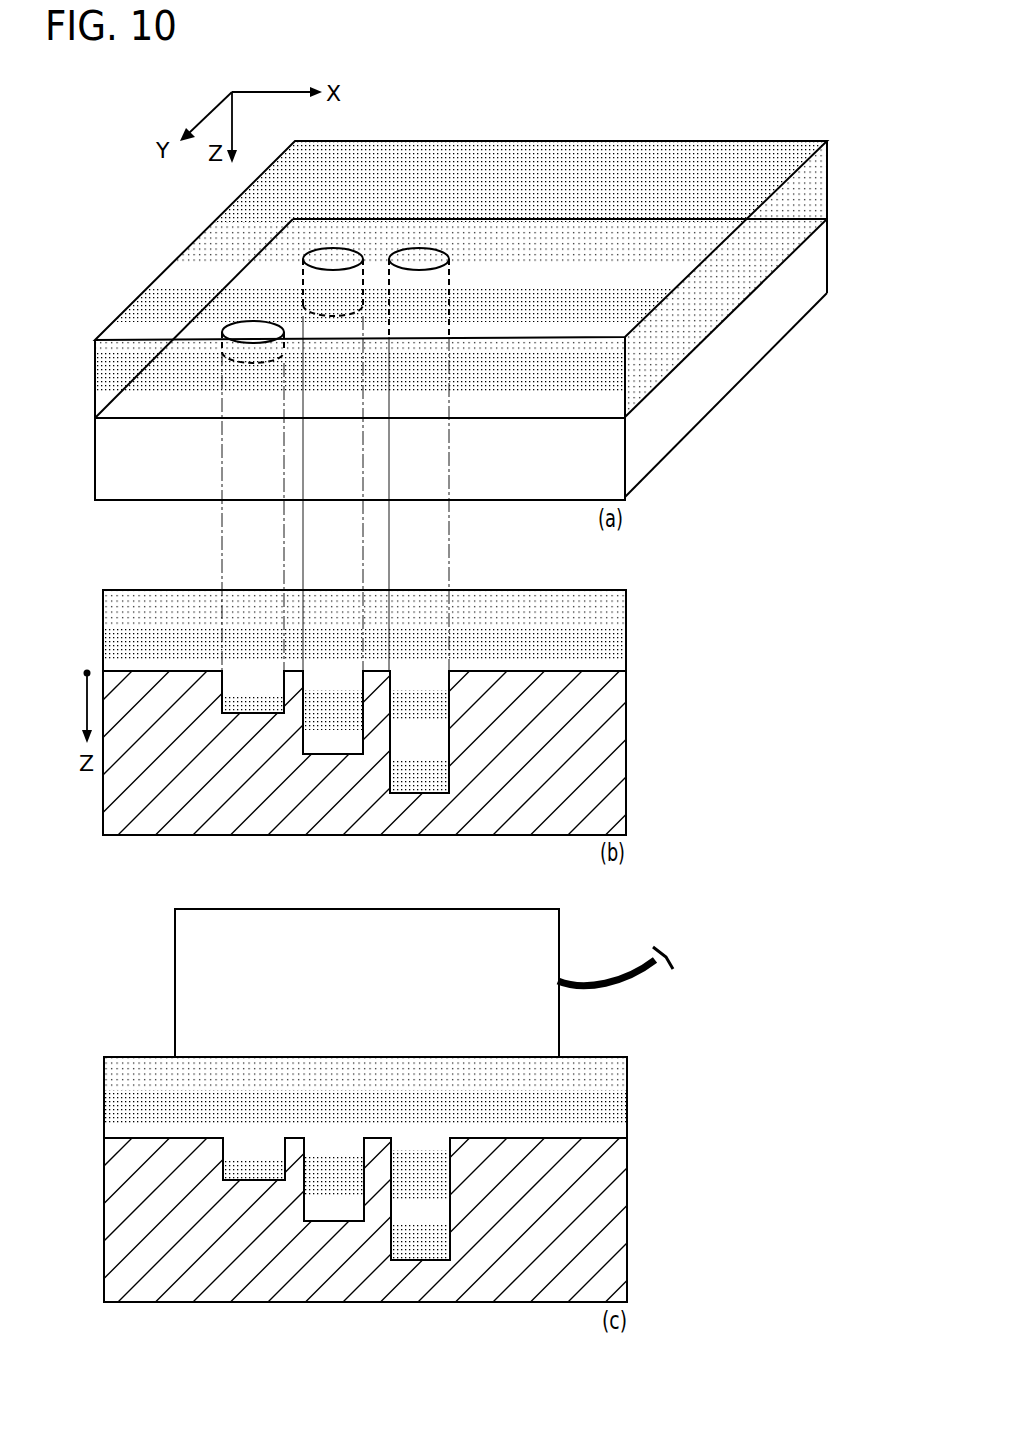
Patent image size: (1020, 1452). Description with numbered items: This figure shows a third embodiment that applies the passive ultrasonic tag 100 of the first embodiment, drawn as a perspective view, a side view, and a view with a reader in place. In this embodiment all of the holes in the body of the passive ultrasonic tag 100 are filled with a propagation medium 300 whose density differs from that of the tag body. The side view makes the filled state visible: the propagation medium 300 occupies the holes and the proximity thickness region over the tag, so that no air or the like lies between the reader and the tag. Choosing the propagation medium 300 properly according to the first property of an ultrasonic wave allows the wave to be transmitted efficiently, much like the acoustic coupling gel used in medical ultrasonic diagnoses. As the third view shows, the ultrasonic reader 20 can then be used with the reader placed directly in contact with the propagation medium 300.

The propagation medium 300 is at (663, 152).
The passive ultrasonic tag 100 is at (753, 355).
The ultrasonic reader 20 is at (551, 1030).